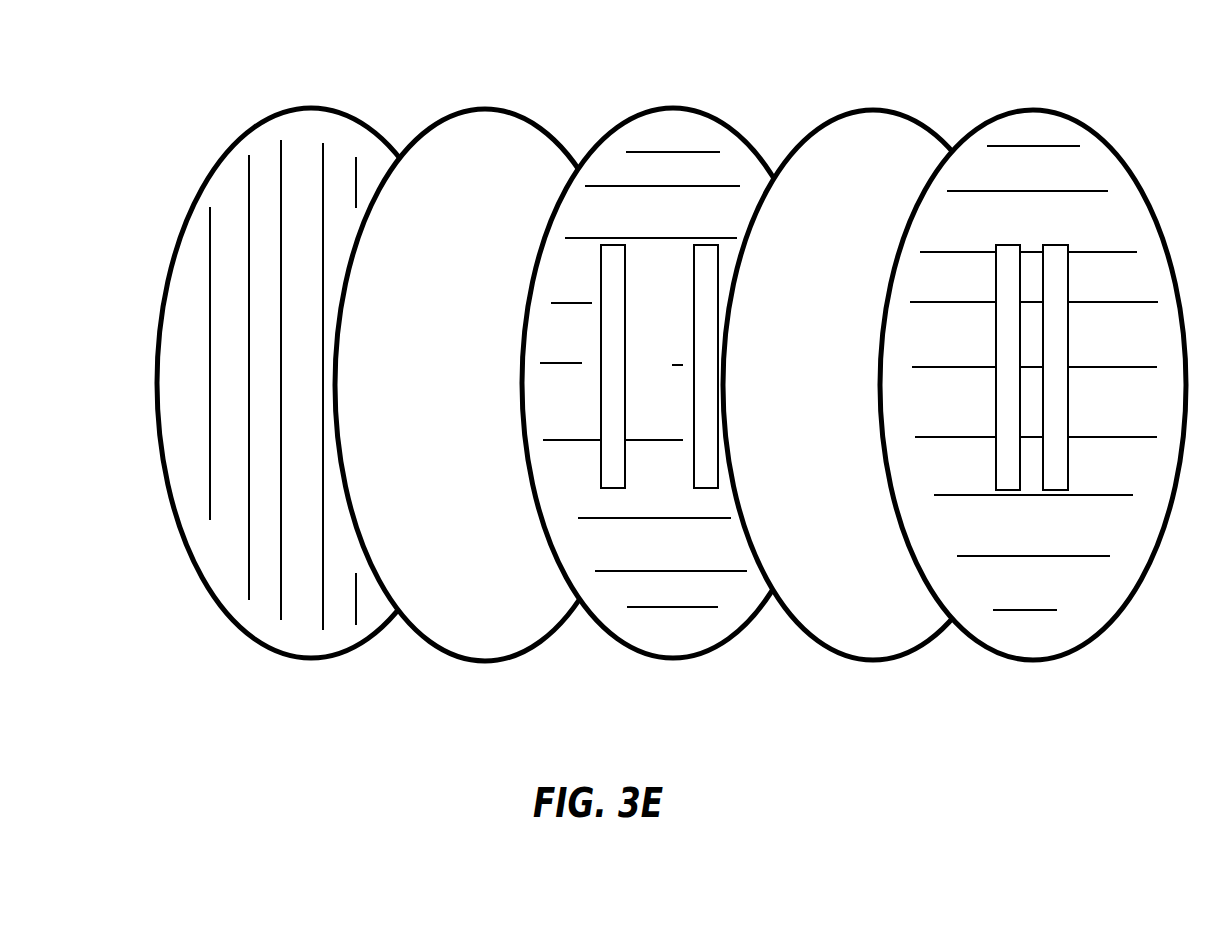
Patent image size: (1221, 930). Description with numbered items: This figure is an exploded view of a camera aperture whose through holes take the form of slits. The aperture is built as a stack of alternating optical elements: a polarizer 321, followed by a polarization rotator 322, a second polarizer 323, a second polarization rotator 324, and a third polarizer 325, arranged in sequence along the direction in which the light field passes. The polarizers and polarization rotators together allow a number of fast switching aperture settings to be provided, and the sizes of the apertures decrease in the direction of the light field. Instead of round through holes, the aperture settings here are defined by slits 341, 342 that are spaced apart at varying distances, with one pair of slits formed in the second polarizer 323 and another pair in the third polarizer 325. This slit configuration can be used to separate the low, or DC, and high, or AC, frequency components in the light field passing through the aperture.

The polarizer 321 is at (278, 105).
The polarization rotator 322 is at (418, 132).
The polarizer 323 is at (673, 361).
The polarization rotator 324 is at (837, 112).
The polarizer 325 is at (1033, 359).
The slits 341 is at (695, 268).
The slits 342 is at (1032, 257).